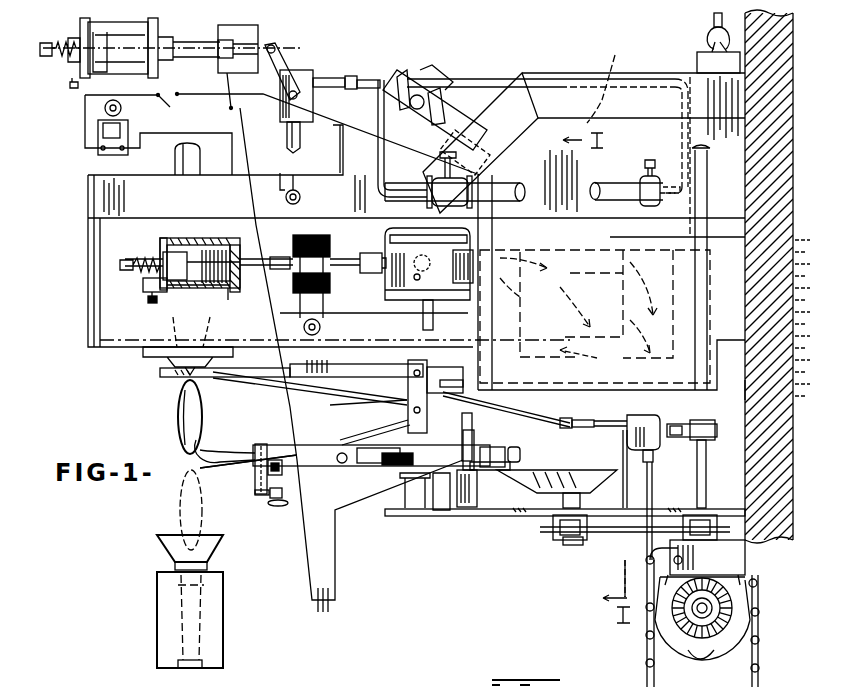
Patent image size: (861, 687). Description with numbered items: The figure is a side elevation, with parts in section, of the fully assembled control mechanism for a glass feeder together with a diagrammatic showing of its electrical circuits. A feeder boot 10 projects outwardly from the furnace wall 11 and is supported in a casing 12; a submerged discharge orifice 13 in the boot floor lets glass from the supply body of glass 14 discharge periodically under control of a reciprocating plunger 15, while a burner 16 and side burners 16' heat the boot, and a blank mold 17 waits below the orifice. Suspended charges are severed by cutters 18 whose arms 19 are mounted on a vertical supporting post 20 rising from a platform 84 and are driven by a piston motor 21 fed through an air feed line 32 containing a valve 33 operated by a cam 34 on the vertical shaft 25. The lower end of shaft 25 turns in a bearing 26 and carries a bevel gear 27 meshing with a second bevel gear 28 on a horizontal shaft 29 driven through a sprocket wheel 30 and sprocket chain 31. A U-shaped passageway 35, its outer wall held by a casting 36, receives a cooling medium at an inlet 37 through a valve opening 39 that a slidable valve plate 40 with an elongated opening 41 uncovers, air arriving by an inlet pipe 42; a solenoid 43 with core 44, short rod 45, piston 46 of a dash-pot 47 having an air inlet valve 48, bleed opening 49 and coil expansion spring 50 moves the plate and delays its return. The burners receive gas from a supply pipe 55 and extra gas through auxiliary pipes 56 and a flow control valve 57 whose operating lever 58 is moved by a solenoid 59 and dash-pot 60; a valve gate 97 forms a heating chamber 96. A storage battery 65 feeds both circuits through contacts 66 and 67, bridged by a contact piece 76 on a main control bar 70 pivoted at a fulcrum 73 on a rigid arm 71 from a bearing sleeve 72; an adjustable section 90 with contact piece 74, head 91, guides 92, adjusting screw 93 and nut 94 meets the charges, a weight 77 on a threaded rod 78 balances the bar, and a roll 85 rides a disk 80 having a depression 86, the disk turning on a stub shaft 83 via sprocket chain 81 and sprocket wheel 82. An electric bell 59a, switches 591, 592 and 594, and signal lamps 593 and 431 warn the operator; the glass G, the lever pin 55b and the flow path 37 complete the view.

The feeder boot 10 is at (728, 327).
The furnace wall 11 is at (753, 390).
The casing 12 is at (732, 198).
The discharge orifice 13 is at (173, 323).
The supply body of glass 14 is at (627, 237).
The reciprocating plunger 15 is at (175, 155).
The burner 16 is at (460, 139).
The side burner 16' is at (532, 180).
The blank mold 17 is at (220, 590).
The cutters 18 is at (168, 377).
The cutter arms 19 is at (330, 397).
The vertical supporting post 20 is at (435, 512).
The piston motor 21 is at (437, 407).
The vertical shaft 25 is at (700, 462).
The bearing 26 is at (730, 548).
The bevel gear 27 is at (760, 595).
The second bevel gear 28 is at (737, 627).
The horizontal shaft 29 is at (705, 657).
The sprocket wheel 30 is at (682, 645).
The sprocket chain 31 is at (645, 650).
The air feed line 32 is at (550, 416).
The valve 33 is at (653, 413).
The cam 34 is at (688, 407).
The U-shaped passageway 35 is at (598, 360).
The casting 36 is at (708, 292).
The inlet 37 is at (570, 295).
The valve opening 39 is at (417, 277).
The slidable valve plate 40 is at (380, 252).
The elongated opening 41 is at (425, 262).
The inlet pipe 42 is at (423, 327).
The solenoid 43 is at (312, 237).
The electric lamp 431 is at (321, 327).
The solenoid core 44 is at (285, 258).
The short rod 45 is at (247, 285).
The piston 46 is at (200, 250).
The dash-pot 47 is at (200, 285).
The air inlet valve 48 is at (162, 243).
The needle valve controlled bleed opening 49 is at (147, 280).
The coil expansion spring 50 is at (228, 297).
The supply pipe 55 is at (333, 80).
The valve handle 55b is at (642, 163).
The auxiliary gas supply pipes 56 is at (478, 80).
The flow control valve 57 is at (313, 105).
The operating lever 58 is at (287, 67).
The solenoid 59 is at (258, 28).
The electric bell 59a is at (97, 130).
The switch 591 is at (162, 102).
The switch 592 is at (238, 108).
The signal lamp 593 is at (300, 200).
The switch 594 is at (342, 167).
The dash-pot 60 is at (150, 28).
The storage battery 65 is at (335, 603).
The switch contacts 66 is at (470, 472).
The switch contacts 67 is at (473, 428).
The main control bar 70 is at (322, 463).
The rigid arm 71 is at (348, 435).
The bearing sleeve 72 is at (390, 405).
The fulcrum 73 is at (345, 462).
The contact piece 74 is at (212, 448).
The contact piece 76 is at (460, 440).
The weight 77 is at (393, 466).
The threaded rod 78 is at (453, 473).
The disk 80 is at (625, 473).
The sprocket chain 81 is at (625, 533).
The sprocket wheel 82 is at (557, 540).
The stub shaft 83 is at (580, 540).
The platform 84 is at (488, 515).
The roll 85 is at (523, 452).
The depression 86 is at (550, 483).
The vertically adjustable section 90 is at (225, 462).
The head 91 is at (264, 447).
The vertical guides 92 is at (257, 490).
The adjusting screw 93 is at (287, 497).
The nut 94 is at (278, 473).
The heating chamber 96 is at (616, 63).
The valve gate 97 is at (697, 60).
The glass G is at (180, 416).